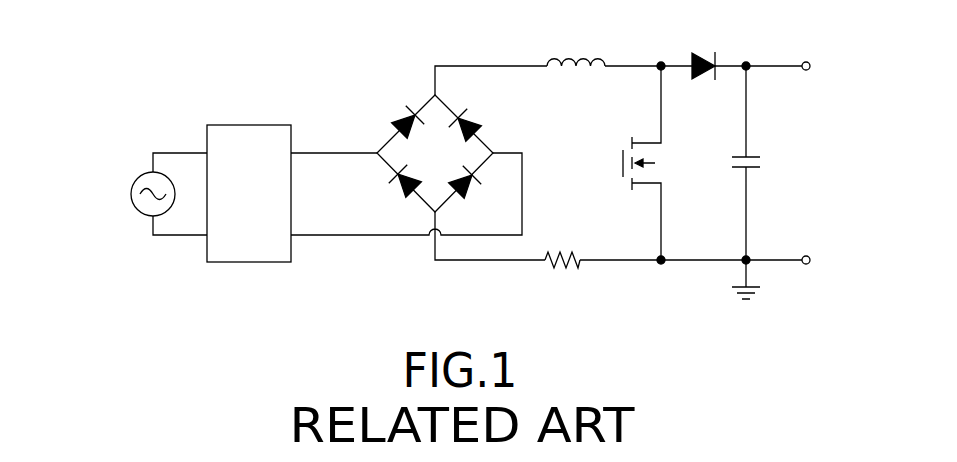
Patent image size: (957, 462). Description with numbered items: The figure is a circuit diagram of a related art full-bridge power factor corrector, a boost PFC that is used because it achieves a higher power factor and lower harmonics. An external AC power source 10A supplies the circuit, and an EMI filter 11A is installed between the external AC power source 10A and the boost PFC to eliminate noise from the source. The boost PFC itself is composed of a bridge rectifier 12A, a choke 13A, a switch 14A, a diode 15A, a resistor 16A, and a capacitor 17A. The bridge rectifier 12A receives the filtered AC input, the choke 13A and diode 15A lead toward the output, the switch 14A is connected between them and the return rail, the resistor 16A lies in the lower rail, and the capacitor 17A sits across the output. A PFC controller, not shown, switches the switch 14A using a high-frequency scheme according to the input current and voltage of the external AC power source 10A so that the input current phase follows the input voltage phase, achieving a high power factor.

The external AC power source 10A is at (132, 194).
The EMI filter 11A is at (250, 130).
The bridge rectifier 12A is at (388, 98).
The choke 13A is at (576, 48).
The switch 14A is at (623, 177).
The diode 15A is at (700, 54).
The resistor 16A is at (561, 247).
The capacitor 17A is at (766, 165).